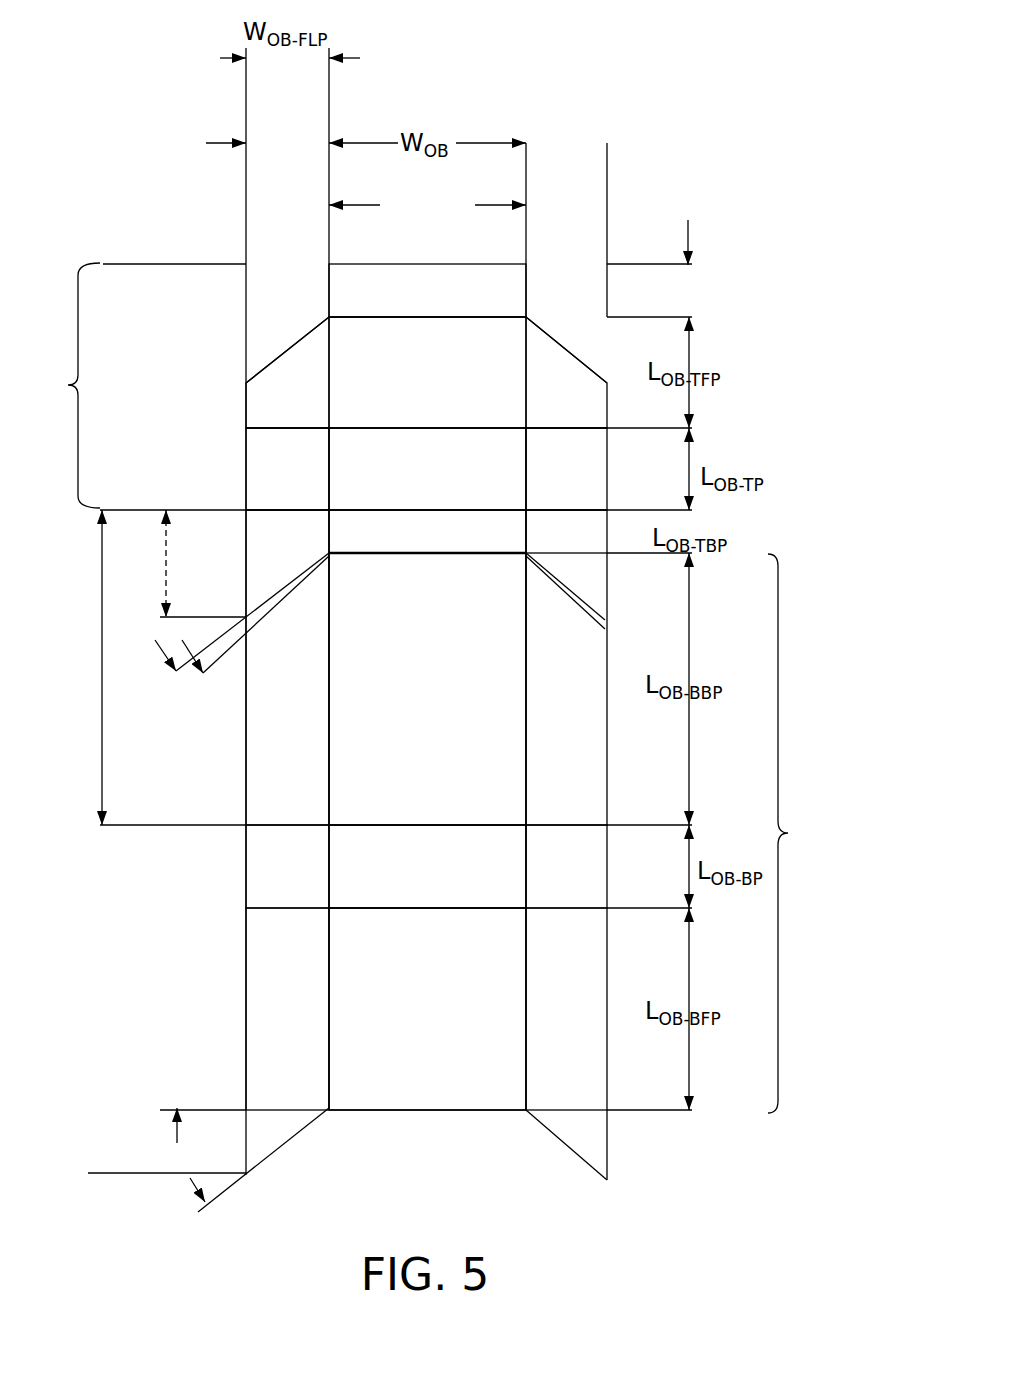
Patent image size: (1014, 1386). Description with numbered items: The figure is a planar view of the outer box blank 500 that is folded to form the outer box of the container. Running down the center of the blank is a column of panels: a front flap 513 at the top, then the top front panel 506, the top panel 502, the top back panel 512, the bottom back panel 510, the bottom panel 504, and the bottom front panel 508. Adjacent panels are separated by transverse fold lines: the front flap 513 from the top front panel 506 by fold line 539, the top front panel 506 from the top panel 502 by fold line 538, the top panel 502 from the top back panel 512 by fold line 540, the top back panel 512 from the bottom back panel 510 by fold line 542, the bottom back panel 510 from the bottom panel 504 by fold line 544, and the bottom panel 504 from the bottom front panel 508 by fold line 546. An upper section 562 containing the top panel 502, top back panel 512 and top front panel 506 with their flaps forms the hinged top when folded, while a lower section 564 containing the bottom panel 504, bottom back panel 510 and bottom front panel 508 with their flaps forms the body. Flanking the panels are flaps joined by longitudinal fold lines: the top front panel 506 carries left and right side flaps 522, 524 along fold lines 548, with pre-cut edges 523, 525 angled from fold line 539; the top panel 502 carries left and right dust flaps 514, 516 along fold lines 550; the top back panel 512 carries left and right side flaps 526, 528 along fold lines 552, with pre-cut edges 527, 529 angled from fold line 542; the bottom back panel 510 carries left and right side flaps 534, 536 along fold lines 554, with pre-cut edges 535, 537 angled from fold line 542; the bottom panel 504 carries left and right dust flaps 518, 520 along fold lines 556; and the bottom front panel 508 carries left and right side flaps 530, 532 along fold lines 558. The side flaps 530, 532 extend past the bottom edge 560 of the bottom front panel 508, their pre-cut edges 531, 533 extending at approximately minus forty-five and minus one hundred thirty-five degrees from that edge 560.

The outer box blank 500 is at (739, 150).
The top panel 502 is at (409, 489).
The bottom panel 504 is at (407, 895).
The top front panel 506 is at (409, 392).
The bottom front panel 508 is at (407, 1052).
The bottom back panel 510 is at (409, 680).
The top back panel 512 is at (409, 545).
The front flap 513 is at (409, 305).
The left dust flap 514 is at (269, 484).
The right dust flap 516 is at (547, 484).
The left dust flap 518 is at (267, 890).
The right dust flap 520 is at (547, 889).
The left side flap 522 is at (269, 409).
The pre-cut edge 523 is at (278, 355).
The right side flap 524 is at (547, 409).
The pre-cut edge 525 is at (583, 360).
The left side flap 526 is at (269, 545).
The pre-cut edge 527 is at (277, 590).
The right side flap 528 is at (547, 545).
The pre-cut edge 529 is at (577, 590).
The left side flap 530 is at (267, 1022).
The pre-cut edge 531 is at (287, 1140).
The right side flap 532 is at (547, 1025).
The pre-cut edge 533 is at (555, 1142).
The left side flap 534 is at (267, 752).
The pre-cut edge 535 is at (260, 620).
The right side flap 536 is at (547, 750).
The pre-cut edge 537 is at (593, 623).
The transverse fold line 538 is at (463, 428).
The transverse fold line 539 is at (385, 318).
The transverse fold line 540 is at (463, 512).
The transverse fold line 542 is at (427, 553).
The transverse fold line 544 is at (408, 823).
The transverse fold line 546 is at (392, 910).
The longitudinal fold lines 548 is at (329, 358).
The longitudinal fold lines 550 is at (329, 447).
The longitudinal fold lines 552 is at (330, 533).
The longitudinal fold lines 554 is at (329, 712).
The longitudinal fold lines 556 is at (329, 850).
The longitudinal fold lines 558 is at (329, 937).
The edge 560 is at (428, 1112).
The upper section 562 is at (62, 385).
The lower section 564 is at (800, 833).